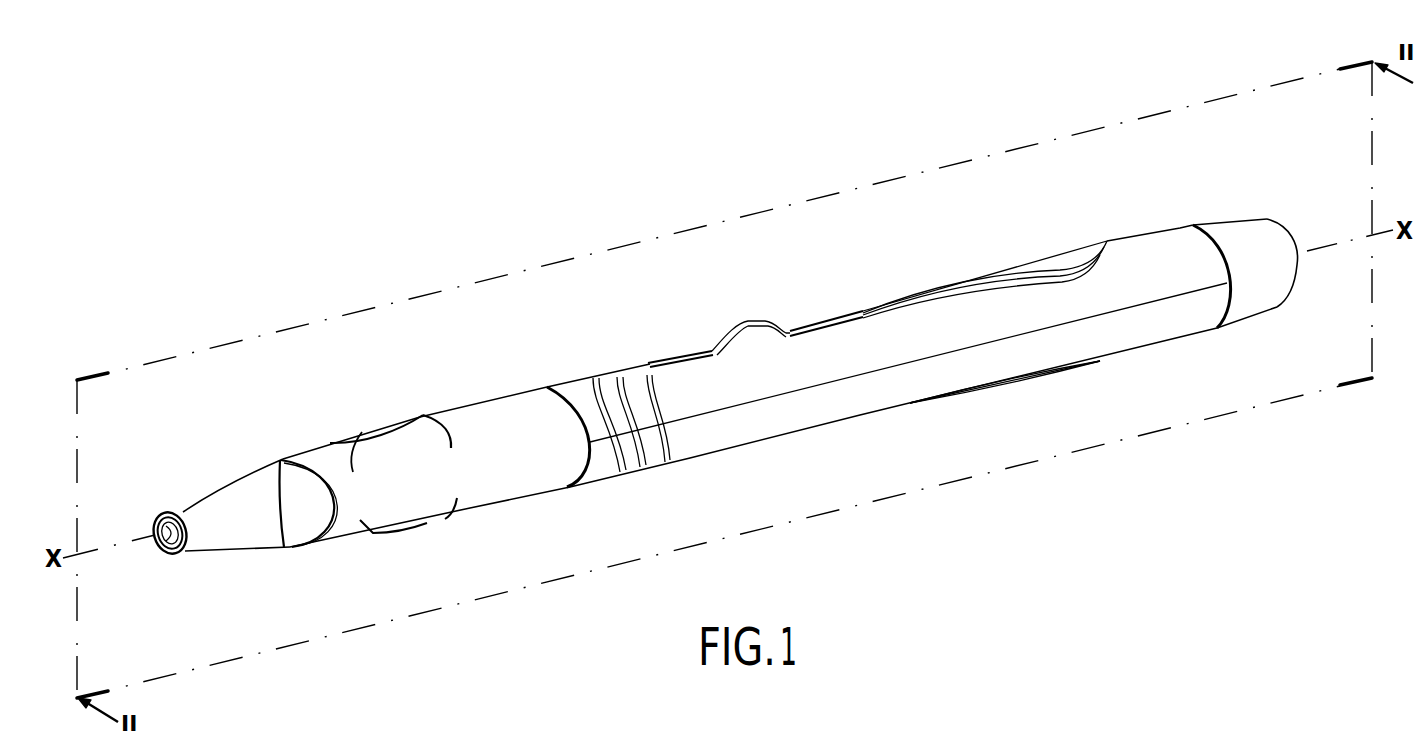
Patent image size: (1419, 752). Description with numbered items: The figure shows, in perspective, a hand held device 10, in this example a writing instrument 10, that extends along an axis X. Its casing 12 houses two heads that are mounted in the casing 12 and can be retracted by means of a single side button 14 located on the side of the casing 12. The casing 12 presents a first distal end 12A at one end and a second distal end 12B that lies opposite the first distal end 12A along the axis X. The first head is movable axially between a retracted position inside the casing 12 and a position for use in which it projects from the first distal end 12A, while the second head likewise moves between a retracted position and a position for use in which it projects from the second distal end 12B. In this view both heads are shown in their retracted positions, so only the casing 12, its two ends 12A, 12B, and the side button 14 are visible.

The hand held device 10 is at (589, 223).
The casing 12 is at (570, 385).
The first distal end 12A is at (160, 514).
The second distal end 12B is at (1303, 263).
The side button 14 is at (742, 330).